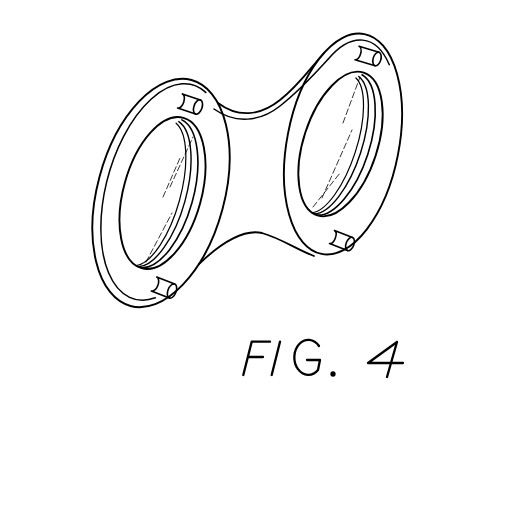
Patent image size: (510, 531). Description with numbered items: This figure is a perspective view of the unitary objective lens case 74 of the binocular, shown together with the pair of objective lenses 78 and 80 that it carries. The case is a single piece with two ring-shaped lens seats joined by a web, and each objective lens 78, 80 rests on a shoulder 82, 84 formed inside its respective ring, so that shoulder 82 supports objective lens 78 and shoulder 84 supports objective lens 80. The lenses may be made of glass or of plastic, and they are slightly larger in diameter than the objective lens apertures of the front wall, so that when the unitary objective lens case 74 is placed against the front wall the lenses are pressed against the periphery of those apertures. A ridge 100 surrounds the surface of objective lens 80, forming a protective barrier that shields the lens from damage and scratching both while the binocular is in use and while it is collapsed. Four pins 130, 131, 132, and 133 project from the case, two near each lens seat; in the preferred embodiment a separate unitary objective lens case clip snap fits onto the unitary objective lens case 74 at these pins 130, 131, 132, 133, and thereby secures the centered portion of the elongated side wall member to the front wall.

The unitary objective lens case 74 is at (143, 203).
The objective lens 78 is at (177, 250).
The objective lens 80 is at (354, 120).
The shoulder 82 is at (200, 169).
The shoulder 84 is at (382, 143).
The ridge 100 is at (365, 187).
The pin 130 is at (199, 102).
The pin 131 is at (381, 52).
The pin 132 is at (165, 298).
The pin 133 is at (343, 256).